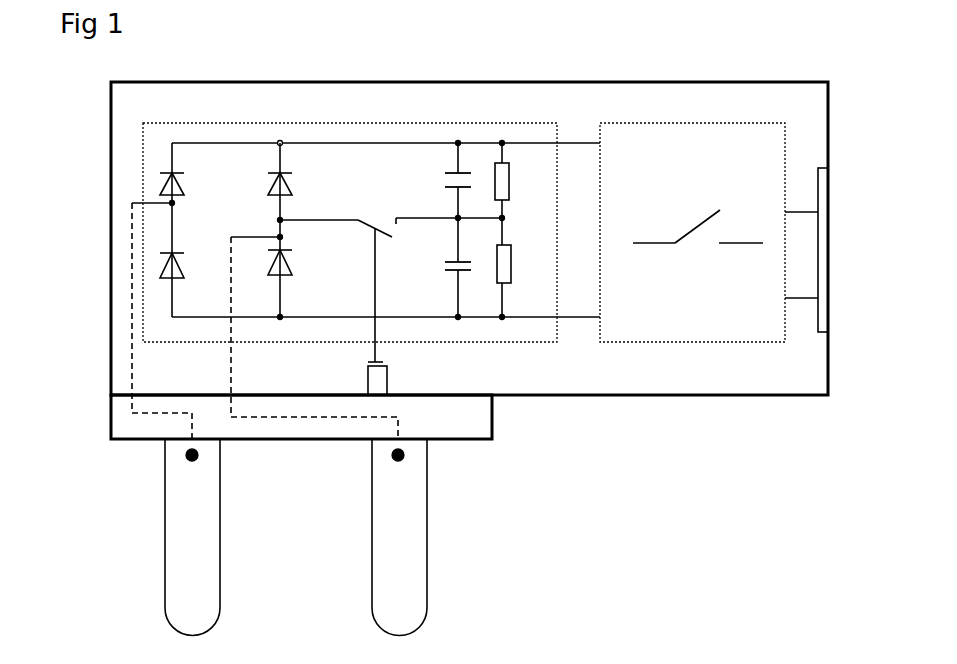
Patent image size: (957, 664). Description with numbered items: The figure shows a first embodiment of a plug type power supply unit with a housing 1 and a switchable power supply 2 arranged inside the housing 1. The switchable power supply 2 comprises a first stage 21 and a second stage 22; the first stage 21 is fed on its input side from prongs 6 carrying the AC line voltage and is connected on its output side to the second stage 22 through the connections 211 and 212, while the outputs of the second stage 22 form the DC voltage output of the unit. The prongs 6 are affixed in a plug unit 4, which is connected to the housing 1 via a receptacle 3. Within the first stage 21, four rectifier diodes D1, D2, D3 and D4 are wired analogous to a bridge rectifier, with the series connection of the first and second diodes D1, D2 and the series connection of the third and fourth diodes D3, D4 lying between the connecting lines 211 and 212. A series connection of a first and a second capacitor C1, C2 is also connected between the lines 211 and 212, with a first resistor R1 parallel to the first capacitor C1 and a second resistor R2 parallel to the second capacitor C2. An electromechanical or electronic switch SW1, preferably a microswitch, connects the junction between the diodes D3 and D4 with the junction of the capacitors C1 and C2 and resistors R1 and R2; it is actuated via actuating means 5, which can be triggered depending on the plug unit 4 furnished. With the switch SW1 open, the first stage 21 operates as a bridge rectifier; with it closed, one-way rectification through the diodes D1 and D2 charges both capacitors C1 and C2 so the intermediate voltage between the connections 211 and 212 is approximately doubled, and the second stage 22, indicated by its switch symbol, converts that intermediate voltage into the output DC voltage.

The housing 1 is at (470, 82).
The switchable power supply 2 is at (533, 352).
The first stage 21 is at (350, 124).
The connecting line 211 is at (538, 141).
The connecting line 212 is at (540, 309).
The second stage 22 is at (693, 342).
The receptacle 3 is at (502, 408).
The plug unit 4 is at (300, 440).
The actuating means 5 is at (358, 373).
The prongs 6 is at (372, 525).
The first diode D1 is at (185, 185).
The second diode D2 is at (185, 266).
The third diode D3 is at (293, 181).
The fourth diode D4 is at (293, 260).
The first capacitor C1 is at (462, 172).
The second capacitor C2 is at (465, 261).
The first resistor R1 is at (510, 181).
The second resistor R2 is at (513, 263).
The switch SW1 is at (373, 222).